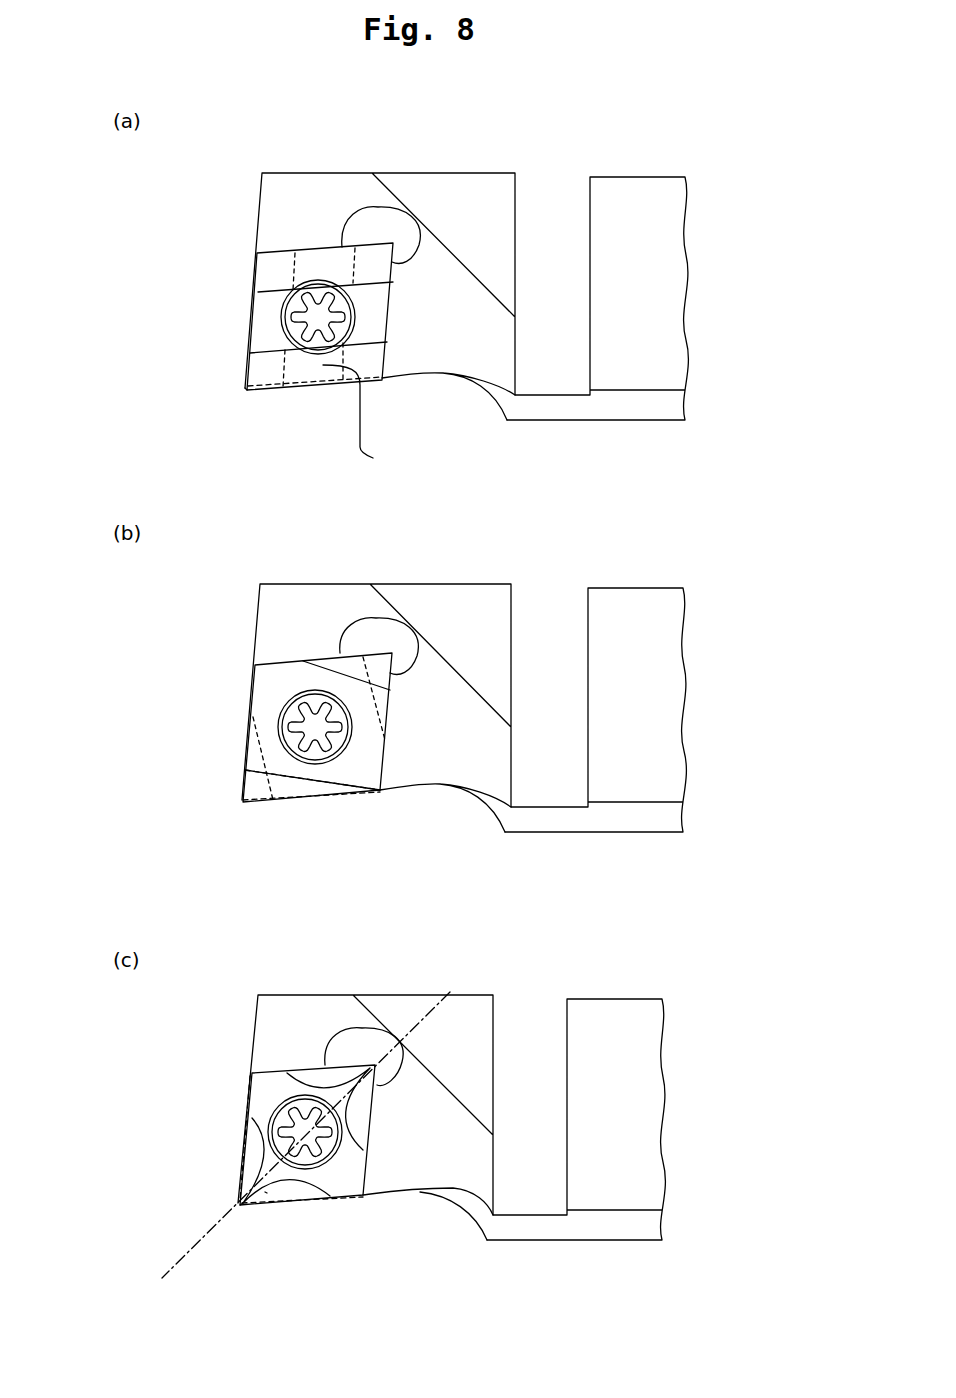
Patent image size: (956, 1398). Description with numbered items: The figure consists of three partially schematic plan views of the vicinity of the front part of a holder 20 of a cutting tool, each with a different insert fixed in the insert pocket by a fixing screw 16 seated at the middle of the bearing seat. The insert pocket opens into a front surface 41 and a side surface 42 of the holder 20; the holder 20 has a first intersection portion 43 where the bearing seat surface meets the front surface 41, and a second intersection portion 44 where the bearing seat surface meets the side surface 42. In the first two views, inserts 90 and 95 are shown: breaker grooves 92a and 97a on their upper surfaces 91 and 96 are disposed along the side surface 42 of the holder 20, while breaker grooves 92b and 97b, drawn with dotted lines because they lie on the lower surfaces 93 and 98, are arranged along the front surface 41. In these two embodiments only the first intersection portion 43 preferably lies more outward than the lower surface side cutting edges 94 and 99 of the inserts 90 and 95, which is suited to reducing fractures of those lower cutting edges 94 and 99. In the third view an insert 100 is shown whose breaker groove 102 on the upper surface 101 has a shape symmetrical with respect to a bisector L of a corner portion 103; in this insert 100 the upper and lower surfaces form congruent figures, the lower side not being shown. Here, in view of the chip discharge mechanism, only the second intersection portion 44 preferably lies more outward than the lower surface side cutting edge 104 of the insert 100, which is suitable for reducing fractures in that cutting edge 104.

The fixing screw 16 is at (357, 313).
The holder 20 is at (537, 438).
The front surface 41 is at (252, 283).
The side surface 42 is at (328, 388).
The first intersection portion 43 is at (252, 353).
The second intersection portion 44 is at (295, 390).
The insert 90 is at (325, 238).
The upper surface 91 is at (263, 337).
The breaker groove 92a is at (367, 421).
The breaker groove 92b is at (268, 310).
The lower surface 93 is at (260, 370).
The lower surface side cutting edge 94 is at (243, 393).
The insert 95 is at (323, 646).
The upper surface 96 is at (272, 715).
The breaker groove 97a is at (262, 788).
The breaker groove 97b is at (243, 760).
The lower surface 98 is at (253, 785).
The lower surface side cutting edge 99 is at (242, 803).
The insert 100 is at (350, 1051).
The upper surface 101 is at (270, 1093).
The breaker groove 102 is at (267, 1193).
The corner portion 103 is at (237, 1198).
The lower surface side cutting edge 104 is at (241, 1204).
The bisector L is at (183, 1253).